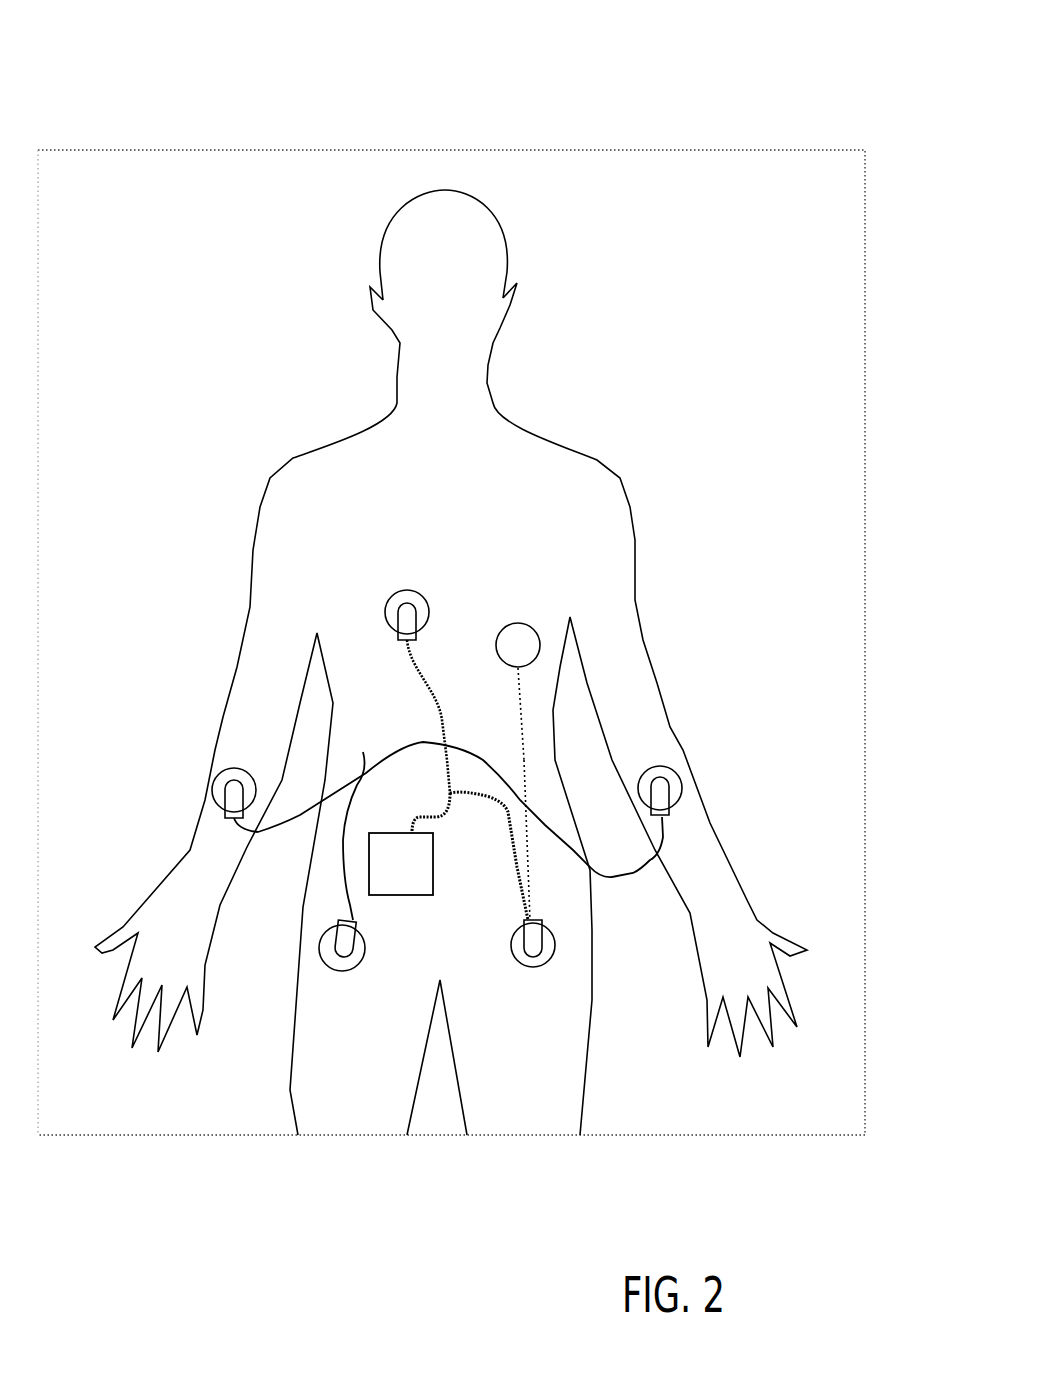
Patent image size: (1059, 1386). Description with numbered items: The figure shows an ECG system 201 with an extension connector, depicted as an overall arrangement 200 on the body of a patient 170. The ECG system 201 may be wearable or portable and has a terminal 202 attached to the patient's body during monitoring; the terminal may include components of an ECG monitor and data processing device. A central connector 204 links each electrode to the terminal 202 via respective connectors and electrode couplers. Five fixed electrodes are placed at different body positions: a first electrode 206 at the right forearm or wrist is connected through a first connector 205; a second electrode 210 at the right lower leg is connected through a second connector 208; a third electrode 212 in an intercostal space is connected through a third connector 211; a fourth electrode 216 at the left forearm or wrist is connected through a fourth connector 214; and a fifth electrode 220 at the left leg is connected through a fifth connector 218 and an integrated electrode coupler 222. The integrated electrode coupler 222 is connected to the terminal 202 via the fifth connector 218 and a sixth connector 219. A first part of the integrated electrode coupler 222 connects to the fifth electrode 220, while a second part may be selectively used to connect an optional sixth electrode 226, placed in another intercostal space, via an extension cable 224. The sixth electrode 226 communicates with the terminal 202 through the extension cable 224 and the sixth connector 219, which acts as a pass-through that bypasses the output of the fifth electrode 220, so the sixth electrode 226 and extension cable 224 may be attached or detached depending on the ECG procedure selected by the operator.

The monitoring system 200 is at (824, 42).
The ECG system 201 is at (688, 521).
The patient 170 is at (508, 242).
The terminal 202 is at (433, 872).
The central connector 204 is at (443, 810).
The first connector 205 is at (298, 822).
The first electrode 206 is at (218, 772).
The second connector 208 is at (435, 803).
The second electrode 210 is at (336, 972).
The third connector 211 is at (410, 667).
The third electrode 212 is at (408, 589).
The fourth connector 214 is at (612, 878).
The fourth electrode 216 is at (673, 772).
The fifth connector 218 is at (500, 812).
The sixth connector 219 is at (522, 848).
The fifth electrode 220 is at (532, 970).
The integrated electrode coupler 222 is at (545, 939).
The extension cable 224 is at (520, 678).
The sixth electrode 226 is at (520, 623).